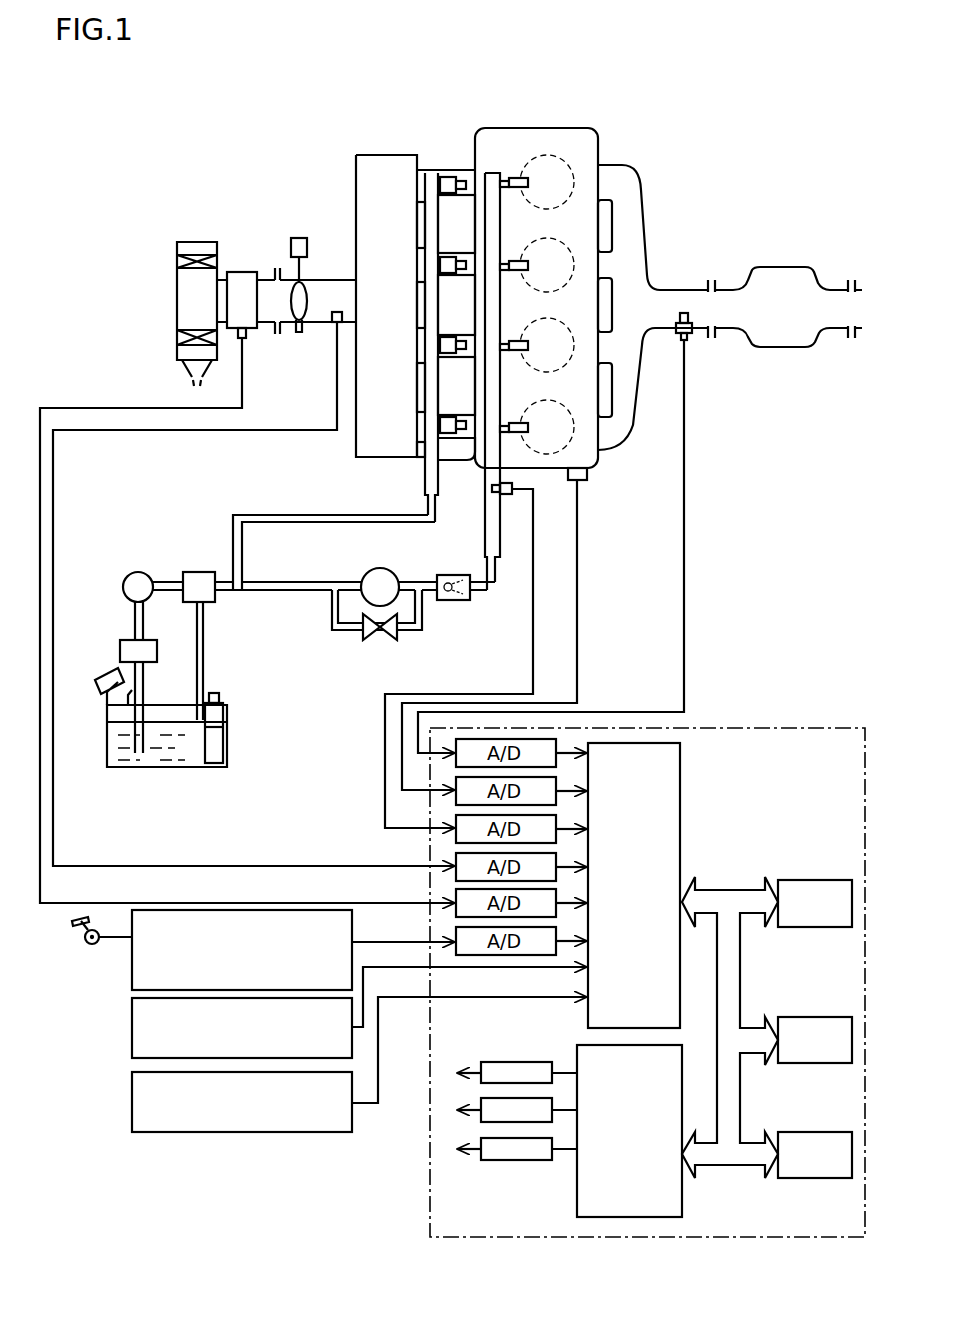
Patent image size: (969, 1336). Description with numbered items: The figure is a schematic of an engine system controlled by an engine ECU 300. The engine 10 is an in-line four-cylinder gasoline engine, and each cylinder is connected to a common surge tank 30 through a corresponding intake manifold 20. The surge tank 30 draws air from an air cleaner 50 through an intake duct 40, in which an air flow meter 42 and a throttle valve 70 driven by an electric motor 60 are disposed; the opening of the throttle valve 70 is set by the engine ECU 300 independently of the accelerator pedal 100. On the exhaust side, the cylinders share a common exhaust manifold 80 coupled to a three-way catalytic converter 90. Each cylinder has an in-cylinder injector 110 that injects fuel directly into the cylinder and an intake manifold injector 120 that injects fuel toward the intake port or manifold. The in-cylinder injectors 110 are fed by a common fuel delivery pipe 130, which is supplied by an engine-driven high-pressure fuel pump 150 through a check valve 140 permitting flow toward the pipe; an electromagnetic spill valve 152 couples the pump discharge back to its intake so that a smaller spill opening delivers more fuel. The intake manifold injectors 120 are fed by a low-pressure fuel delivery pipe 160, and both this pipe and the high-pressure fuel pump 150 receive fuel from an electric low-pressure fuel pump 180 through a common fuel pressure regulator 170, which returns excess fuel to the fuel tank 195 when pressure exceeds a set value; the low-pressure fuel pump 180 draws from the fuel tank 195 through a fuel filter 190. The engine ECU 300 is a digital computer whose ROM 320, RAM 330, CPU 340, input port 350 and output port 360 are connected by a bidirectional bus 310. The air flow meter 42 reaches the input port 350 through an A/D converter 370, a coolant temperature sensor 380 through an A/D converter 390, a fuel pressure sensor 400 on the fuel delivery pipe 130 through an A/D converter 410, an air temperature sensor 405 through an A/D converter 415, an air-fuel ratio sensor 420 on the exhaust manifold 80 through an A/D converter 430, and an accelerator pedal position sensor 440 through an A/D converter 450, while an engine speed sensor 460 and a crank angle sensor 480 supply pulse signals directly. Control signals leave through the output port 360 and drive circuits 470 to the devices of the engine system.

The engine 10 is at (443, 78).
The intake manifold 20 is at (448, 172).
The surge tank 30 is at (385, 155).
The intake duct 40 is at (331, 280).
The air flow meter 42 is at (242, 272).
The air cleaner 50 is at (177, 305).
The electric motor 60 is at (298, 237).
The throttle valve 70 is at (303, 305).
The exhaust manifold 80 is at (636, 190).
The three-way catalytic converter 90 is at (788, 267).
The accelerator pedal 100 is at (78, 938).
The in-cylinder injector 110 is at (520, 177).
The intake manifold injector 120 is at (440, 186).
The fuel delivery pipe 130 is at (493, 172).
The check valve 140 is at (453, 600).
The high-pressure fuel pump 150 is at (375, 568).
The electromagnetic spill valve 152 is at (372, 642).
The fuel delivery pipe 160 is at (424, 483).
The fuel pressure regulator 170 is at (199, 572).
The low-pressure fuel pump 180 is at (137, 572).
The fuel filter 190 is at (120, 652).
The fuel tank 195 is at (168, 767).
The engine ECU 300 is at (785, 712).
The bidirectional bus 310 is at (717, 890).
The ROM 320 is at (813, 927).
The RAM 330 is at (813, 1063).
The CPU 340 is at (813, 1178).
The input port 350 is at (682, 800).
The output port 360 is at (682, 1202).
The A/D converter 370 is at (440, 898).
The coolant temperature sensor 380 is at (587, 478).
The A/D converter 390 is at (440, 788).
The fuel pressure sensor 400 is at (495, 495).
The air temperature sensor 405 is at (333, 323).
The A/D converter 410 is at (440, 825).
The A/D converter 415 is at (440, 862).
The air-fuel ratio sensor 420 is at (692, 328).
The A/D converter 430 is at (440, 750).
The accelerator pedal position sensor 440 is at (132, 950).
The A/D converter 450 is at (440, 938).
The engine speed sensor 460 is at (132, 1024).
The drive circuits 470 is at (487, 1062).
The crank angle sensor 480 is at (132, 1096).